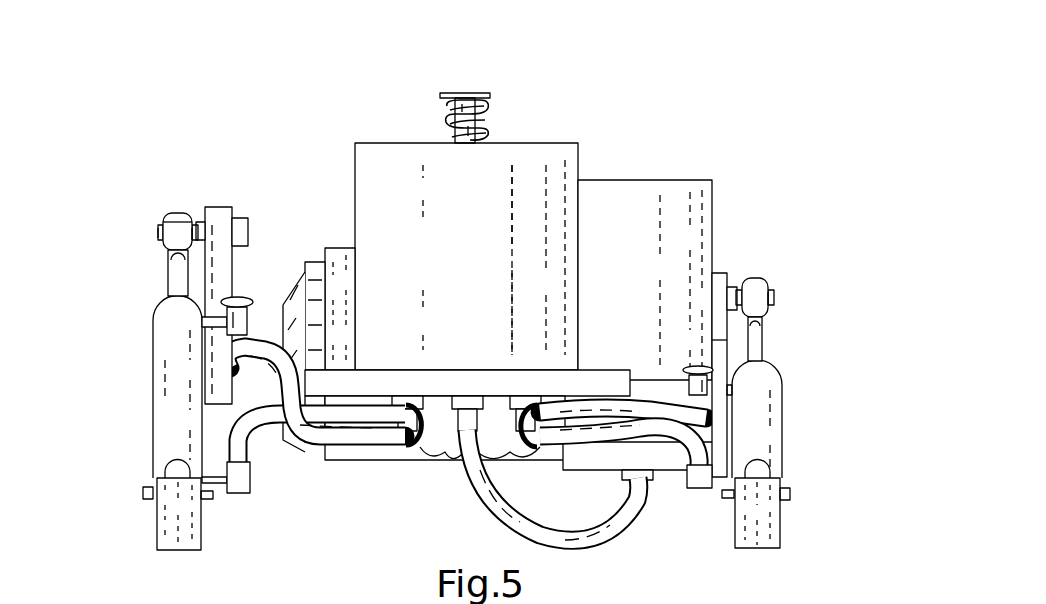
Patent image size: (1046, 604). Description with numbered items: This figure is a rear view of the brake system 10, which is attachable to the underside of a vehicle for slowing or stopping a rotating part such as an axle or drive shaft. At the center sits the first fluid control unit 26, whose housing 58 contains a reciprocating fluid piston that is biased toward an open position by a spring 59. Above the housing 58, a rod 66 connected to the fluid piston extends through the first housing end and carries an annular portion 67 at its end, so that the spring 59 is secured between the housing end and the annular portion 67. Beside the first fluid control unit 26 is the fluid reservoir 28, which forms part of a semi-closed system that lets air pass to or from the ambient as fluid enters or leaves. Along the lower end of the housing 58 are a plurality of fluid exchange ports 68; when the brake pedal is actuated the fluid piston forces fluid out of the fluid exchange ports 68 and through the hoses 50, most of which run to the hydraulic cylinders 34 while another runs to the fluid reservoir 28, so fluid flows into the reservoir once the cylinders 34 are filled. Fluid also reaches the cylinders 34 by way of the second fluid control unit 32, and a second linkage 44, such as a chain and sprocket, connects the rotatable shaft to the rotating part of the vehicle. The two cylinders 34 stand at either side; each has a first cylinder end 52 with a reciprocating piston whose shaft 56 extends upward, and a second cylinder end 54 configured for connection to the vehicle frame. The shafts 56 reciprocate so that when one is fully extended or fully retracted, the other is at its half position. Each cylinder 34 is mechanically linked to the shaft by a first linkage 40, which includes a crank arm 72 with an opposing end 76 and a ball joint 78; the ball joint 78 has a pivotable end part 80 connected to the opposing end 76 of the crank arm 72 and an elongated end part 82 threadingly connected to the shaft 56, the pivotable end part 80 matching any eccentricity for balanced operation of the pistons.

The brake system 10 is at (728, 90).
The first fluid control unit 26 is at (389, 150).
The fluid reservoir 28 is at (650, 185).
The second fluid control unit 32 is at (160, 305).
The hydraulic cylinders 34 is at (153, 400).
The first linkages 40 is at (787, 284).
The second linkage 44 is at (462, 460).
The hoses 50 is at (262, 440).
The first cylinder end 52 is at (162, 230).
The second cylinder end 54 is at (157, 518).
The shaft 56 is at (170, 272).
The housing 58 is at (530, 157).
The spring 59 is at (445, 118).
The rod 66 is at (487, 132).
The annular portion 67 is at (466, 92).
The fluid exchange ports 68 is at (520, 420).
The crank arm 72 is at (218, 268).
The opposing end 76 is at (718, 280).
The ball joint 78 is at (160, 233).
The pivotable end part 80 is at (195, 230).
The elongated end part 82 is at (178, 214).